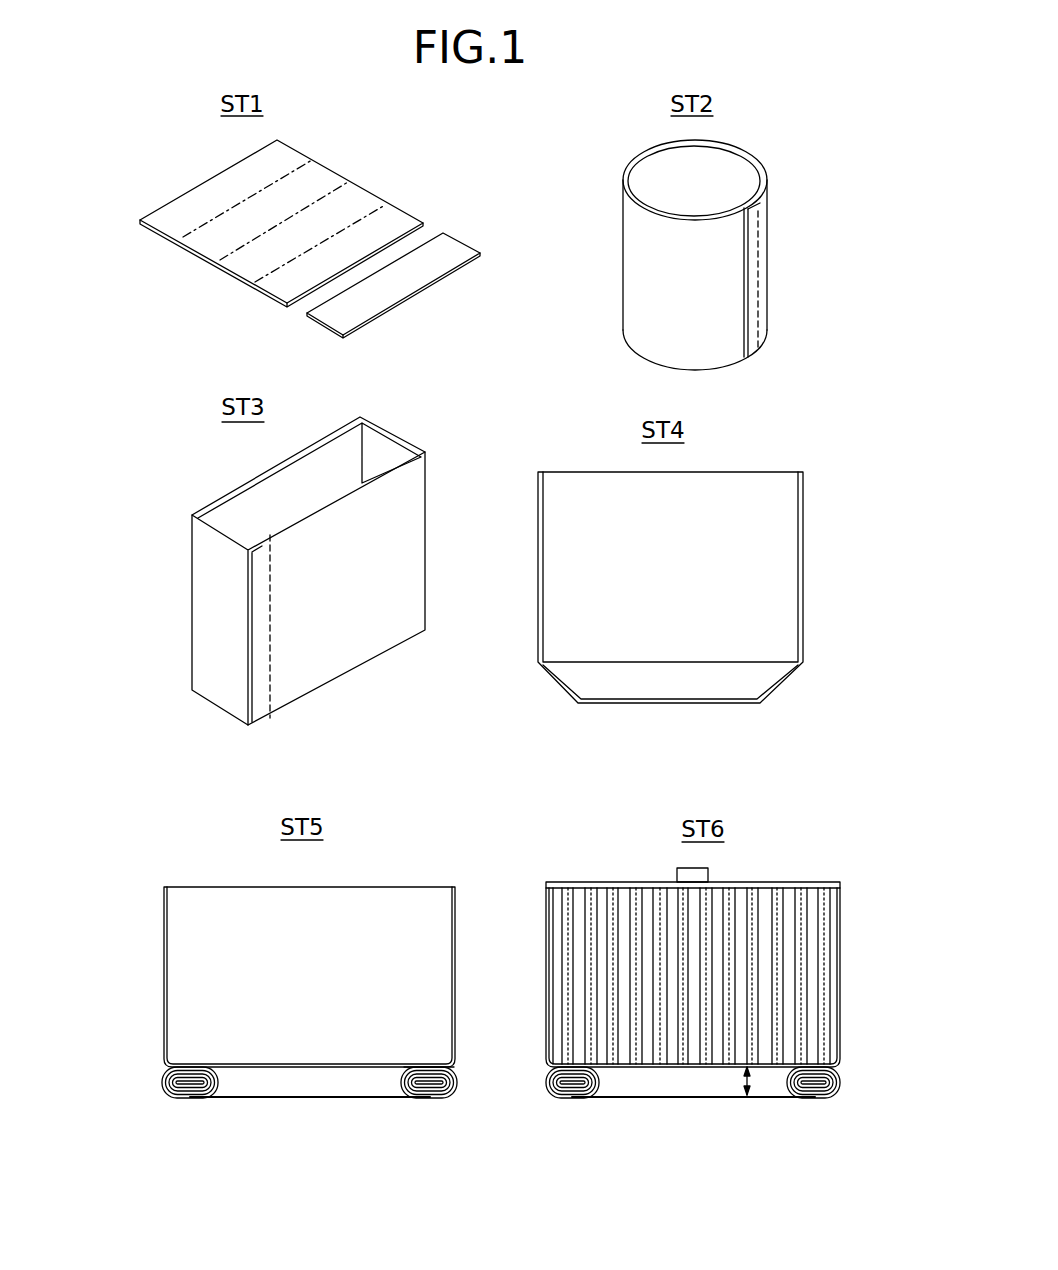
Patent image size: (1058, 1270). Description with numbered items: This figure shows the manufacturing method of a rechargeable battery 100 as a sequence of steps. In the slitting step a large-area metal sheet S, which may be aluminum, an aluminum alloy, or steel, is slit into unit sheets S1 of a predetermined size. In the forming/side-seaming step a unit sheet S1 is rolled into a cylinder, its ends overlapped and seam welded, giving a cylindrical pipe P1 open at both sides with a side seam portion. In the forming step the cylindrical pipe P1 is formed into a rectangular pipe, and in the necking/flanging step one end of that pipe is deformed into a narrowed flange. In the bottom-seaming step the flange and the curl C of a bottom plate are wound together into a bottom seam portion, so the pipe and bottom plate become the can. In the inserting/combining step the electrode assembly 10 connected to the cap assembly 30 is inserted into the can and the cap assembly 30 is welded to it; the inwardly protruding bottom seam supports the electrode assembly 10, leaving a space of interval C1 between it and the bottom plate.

The metal sheet S is at (204, 175).
The unit sheet S1 is at (452, 250).
The pipe P1 is at (677, 275).
The curl C is at (458, 1083).
The cap assembly 30 is at (605, 872).
The electrode assembly 10 is at (645, 916).
The rechargeable battery 100 is at (658, 985).
The interval C1 is at (731, 1081).